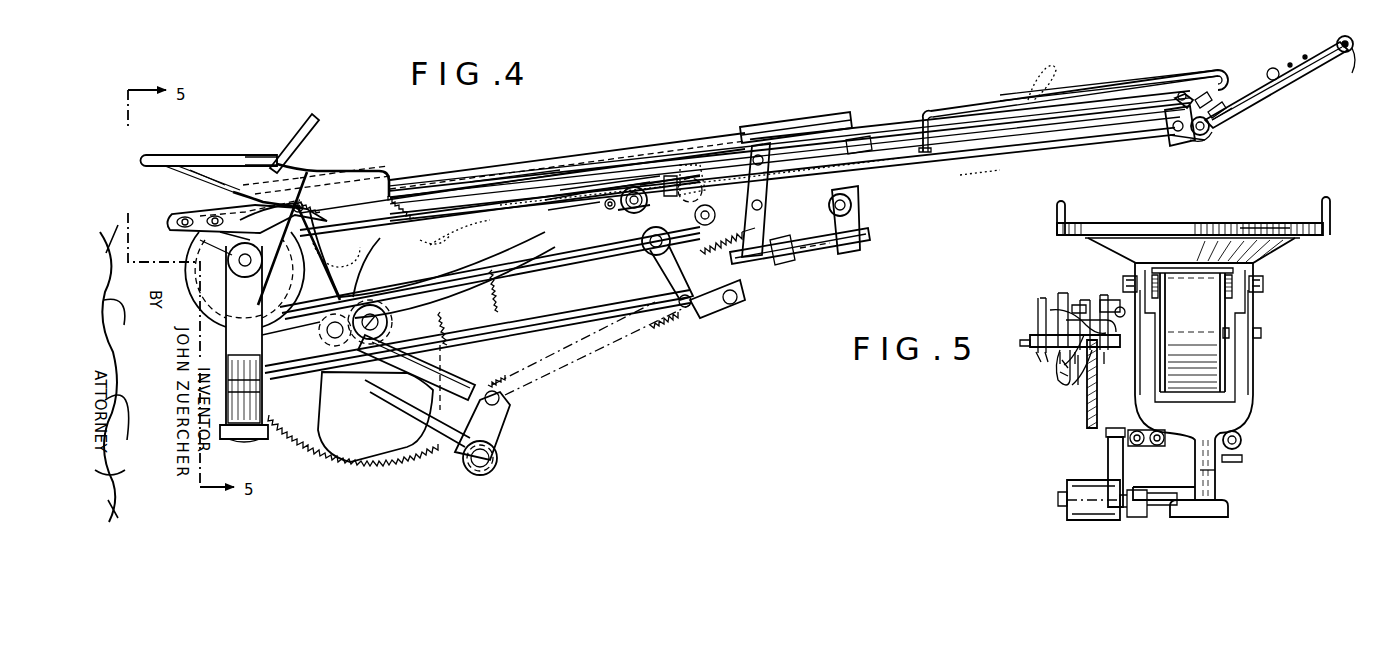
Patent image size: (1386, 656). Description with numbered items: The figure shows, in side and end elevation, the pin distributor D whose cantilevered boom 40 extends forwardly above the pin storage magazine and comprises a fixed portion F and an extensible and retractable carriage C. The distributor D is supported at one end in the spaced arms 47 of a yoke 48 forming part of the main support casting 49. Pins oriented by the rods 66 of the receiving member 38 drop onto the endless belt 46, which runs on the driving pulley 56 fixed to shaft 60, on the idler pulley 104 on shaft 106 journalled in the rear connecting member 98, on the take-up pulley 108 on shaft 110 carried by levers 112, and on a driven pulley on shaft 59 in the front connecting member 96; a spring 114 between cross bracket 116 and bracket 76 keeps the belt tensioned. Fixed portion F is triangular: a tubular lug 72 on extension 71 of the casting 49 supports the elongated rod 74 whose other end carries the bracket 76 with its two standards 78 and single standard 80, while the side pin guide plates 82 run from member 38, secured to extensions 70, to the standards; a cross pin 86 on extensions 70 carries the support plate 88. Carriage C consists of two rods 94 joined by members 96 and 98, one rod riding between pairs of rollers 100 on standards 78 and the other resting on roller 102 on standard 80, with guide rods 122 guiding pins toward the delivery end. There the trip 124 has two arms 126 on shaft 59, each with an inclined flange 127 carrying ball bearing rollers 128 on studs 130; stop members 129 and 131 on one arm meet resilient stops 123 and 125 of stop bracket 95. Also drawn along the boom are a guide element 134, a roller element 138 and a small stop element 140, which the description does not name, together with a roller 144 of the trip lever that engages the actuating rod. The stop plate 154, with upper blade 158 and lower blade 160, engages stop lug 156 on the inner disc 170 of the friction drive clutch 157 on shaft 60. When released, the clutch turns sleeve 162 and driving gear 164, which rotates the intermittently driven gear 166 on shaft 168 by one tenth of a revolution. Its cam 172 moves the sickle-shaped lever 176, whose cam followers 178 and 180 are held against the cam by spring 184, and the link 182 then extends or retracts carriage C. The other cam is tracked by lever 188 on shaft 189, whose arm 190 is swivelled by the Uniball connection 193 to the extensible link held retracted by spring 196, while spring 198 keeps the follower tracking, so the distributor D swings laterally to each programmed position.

In FIG. 4, the pin receiving and orienting member 38 is at (180, 155).
In FIG. 5, the pin receiving and orienting member 38 is at (1170, 225).
In FIG. 4, the boom 40 is at (604, 122).
In FIG. 4, the endless belt 46 is at (195, 250).
In FIG. 5, the endless belt 46 is at (1210, 402).
In FIG. 4, the spaced arms of yoke 47 is at (262, 292).
In FIG. 5, the spaced arms of yoke 47 is at (1256, 312).
In FIG. 5, the yoke 48 is at (1260, 375).
In FIG. 4, the main support casting 49 is at (270, 331).
In FIG. 5, the main support casting 49 is at (1228, 481).
In FIG. 4, the driving pulley 56 is at (192, 258).
In FIG. 5, the driving pulley 56 is at (1230, 364).
In FIG. 4, the shaft 59 is at (1212, 131).
In FIG. 4, the shaft 60 is at (258, 261).
In FIG. 5, the shaft 60 is at (1263, 333).
In FIG. 4, the rods 66 is at (312, 112).
In FIG. 5, the rods 66 is at (1056, 212).
In FIG. 4, the extensions 70 is at (215, 255).
In FIG. 5, the extensions 70 is at (1126, 268).
In FIG. 4, the extension 71 is at (398, 405).
In FIG. 4, the tubular lug 72 is at (438, 372).
In FIG. 4, the elongated rod 74 is at (515, 336).
In FIG. 4, the bracket 76 is at (718, 306).
In FIG. 4, the upstanding standards 78 is at (750, 262).
In FIG. 4, the upstanding standard 80 is at (780, 255).
In FIG. 4, the side pin guide plates 82 is at (456, 176).
In FIG. 4, the cross pin 86 is at (302, 203).
In FIG. 4, the support plate 88 is at (730, 140).
In FIG. 4, the rods 94 is at (1003, 150).
In FIG. 4, the stop bracket 95 is at (1205, 96).
In FIG. 4, the front carriage connecting member 96 is at (1176, 132).
In FIG. 4, the rear carriage connecting member 98 is at (680, 180).
In FIG. 4, the rollers 100 is at (858, 141).
In FIG. 4, the roller 102 is at (836, 260).
In FIG. 4, the idler pulley 104 is at (642, 230).
In FIG. 4, the shaft 106 is at (622, 209).
In FIG. 4, the take-up pulley 108 is at (650, 252).
In FIG. 4, the shaft 110 is at (640, 272).
In FIG. 4, the levers 112 is at (640, 318).
In FIG. 4, the spring 114 is at (762, 266).
In FIG. 4, the cross bracket 116 is at (698, 250).
In FIG. 4, the guide rods 122 is at (1100, 88).
In FIG. 4, the resilient stop 123 is at (1178, 97).
In FIG. 4, the trip 124 is at (1032, 68).
In FIG. 4, the resilient stop 125 is at (1216, 98).
In FIG. 4, the arms 126 is at (1258, 100).
In FIG. 4, the flange 127 is at (1306, 46).
In FIG. 4, the ball bearing rollers 128 is at (1351, 52).
In FIG. 4, the stop member 129 is at (1205, 138).
In FIG. 4, the stud 130 is at (1276, 68).
In FIG. 4, the stop member 131 is at (1225, 105).
In FIG. 4, the guide tube 134 is at (910, 125).
In FIG. 4, the roller 138 is at (633, 185).
In FIG. 4, the stop 140 is at (668, 175).
In FIG. 4, the roller 144 is at (618, 196).
In FIG. 5, the stop plate 154 is at (1094, 298).
In FIG. 5, the stop lug 156 is at (1062, 315).
In FIG. 5, the friction drive clutch 157 is at (1036, 308).
In FIG. 5, the upper blade 158 is at (1056, 298).
In FIG. 5, the lower blade 160 is at (1072, 300).
In FIG. 5, the sleeve 162 is at (1075, 385).
In FIG. 5, the driving gear 164 is at (1078, 395).
In FIG. 4, the intermittently driven gear 166 is at (378, 466).
In FIG. 5, the intermittently driven gear 166 is at (1087, 430).
In FIG. 4, the shaft 168 is at (378, 318).
In FIG. 5, the inner disc 170 is at (1060, 382).
In FIG. 4, the cam 172 is at (328, 412).
In FIG. 4, the sickle-shaped lever 176 is at (510, 248).
In FIG. 4, the cam follower 178 is at (428, 278).
In FIG. 4, the cam follower 180 is at (330, 346).
In FIG. 4, the link 182 is at (592, 196).
In FIG. 4, the spring 184 is at (662, 328).
In FIG. 5, the lever 188 is at (1065, 480).
In FIG. 5, the shaft 189 is at (1128, 510).
In FIG. 5, the arm 190 is at (1108, 465).
In FIG. 5, the Uniball connection 193 is at (1134, 430).
In FIG. 5, the spring 196 is at (1163, 448).
In FIG. 4, the spring 198 is at (234, 349).
In FIG. 5, the spring 198 is at (1242, 442).
In FIG. 4, the carriage C is at (972, 172).
In FIG. 4, the distributor D is at (676, 110).
In FIG. 5, the distributor D is at (1258, 222).
In FIG. 4, the fixed portion F is at (504, 155).